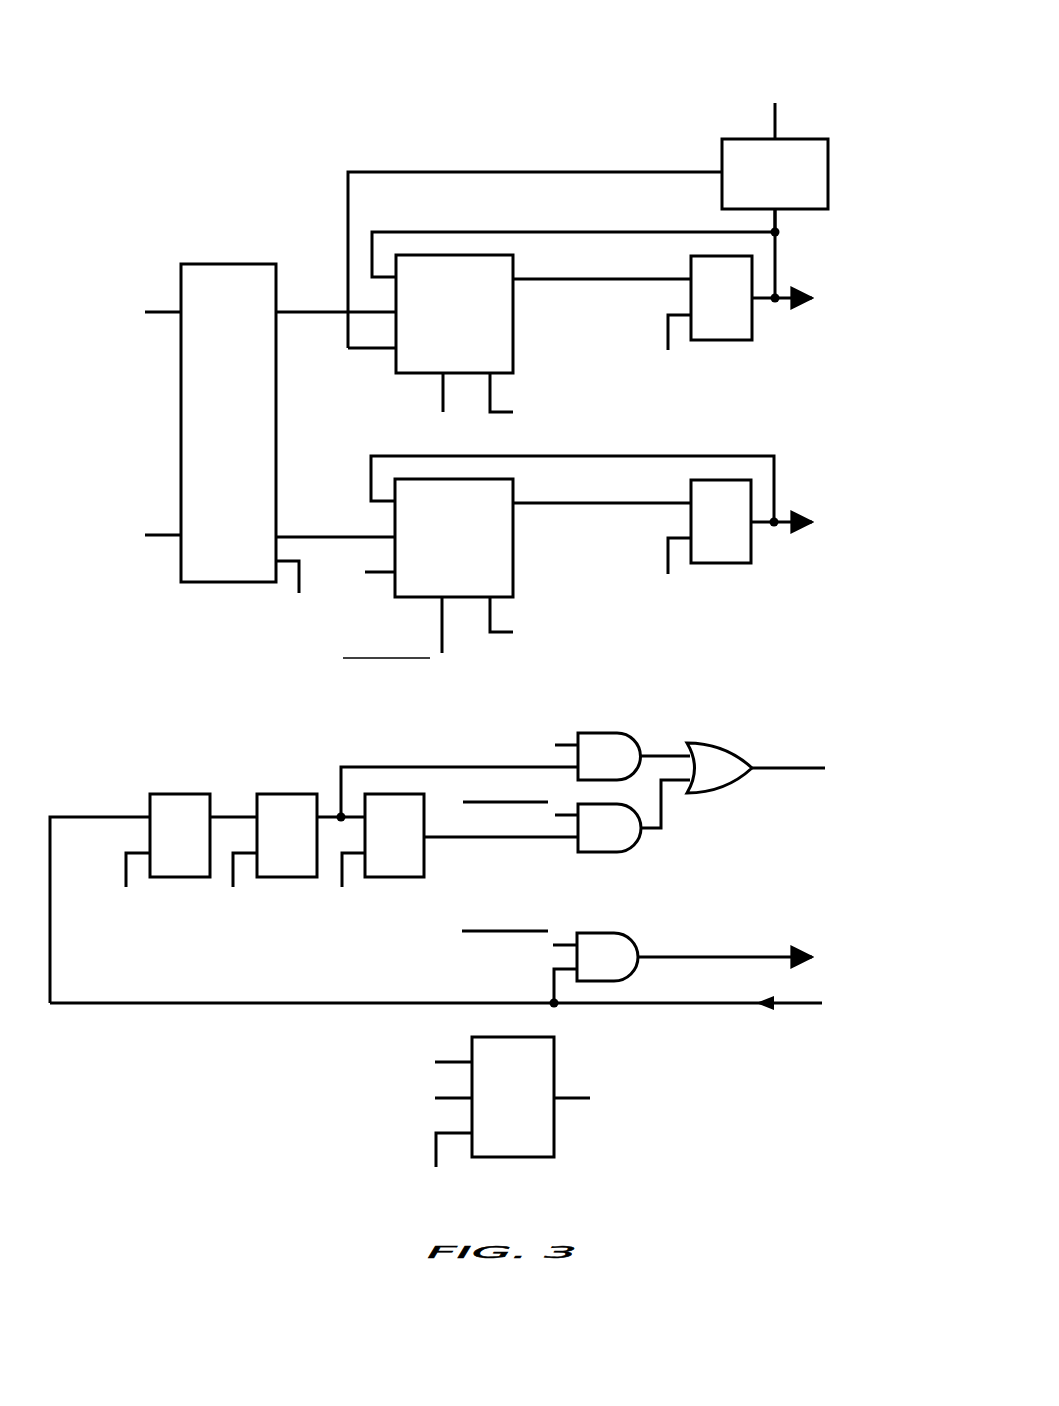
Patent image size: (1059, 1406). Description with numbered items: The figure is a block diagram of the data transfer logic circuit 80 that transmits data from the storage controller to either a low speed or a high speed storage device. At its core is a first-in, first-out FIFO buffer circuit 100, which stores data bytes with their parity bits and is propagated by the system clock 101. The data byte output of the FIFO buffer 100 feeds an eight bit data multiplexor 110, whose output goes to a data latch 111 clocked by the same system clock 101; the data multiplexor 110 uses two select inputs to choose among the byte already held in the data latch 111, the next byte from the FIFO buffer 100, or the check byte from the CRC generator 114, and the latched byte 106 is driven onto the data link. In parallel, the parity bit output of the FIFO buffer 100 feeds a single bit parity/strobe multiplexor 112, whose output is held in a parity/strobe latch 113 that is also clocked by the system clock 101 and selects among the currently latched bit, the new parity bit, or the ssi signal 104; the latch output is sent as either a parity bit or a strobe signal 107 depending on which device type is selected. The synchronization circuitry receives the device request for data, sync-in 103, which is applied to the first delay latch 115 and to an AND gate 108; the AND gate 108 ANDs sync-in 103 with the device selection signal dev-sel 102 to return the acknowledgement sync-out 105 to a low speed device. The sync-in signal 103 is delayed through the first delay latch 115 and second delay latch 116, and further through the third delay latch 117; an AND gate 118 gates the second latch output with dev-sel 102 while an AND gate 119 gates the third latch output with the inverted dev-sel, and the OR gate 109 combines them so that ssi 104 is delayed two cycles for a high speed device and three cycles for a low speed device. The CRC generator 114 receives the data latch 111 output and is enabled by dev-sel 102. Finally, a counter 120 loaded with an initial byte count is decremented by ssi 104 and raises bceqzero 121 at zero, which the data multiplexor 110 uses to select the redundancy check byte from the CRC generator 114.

The data transfer logic circuit 80 is at (266, 66).
The FIFO buffer circuit 100 is at (249, 454).
The system clock 101 is at (114, 558).
The device selection signal (dev-sel) 102 is at (782, 68).
The sync-in signal 103 is at (871, 1026).
The ssi synchronization signal 104 is at (416, 420).
The sync-out signal 105 is at (870, 937).
The 0:7 output 106 is at (852, 280).
The parity bit or strobe signal 107 is at (848, 503).
The AND gate 108 is at (590, 933).
The combinational logic (OR gate) 109 is at (722, 793).
The data multiplexor 110 is at (513, 318).
The data latch 111 is at (752, 318).
The parity/strobe multiplexor 112 is at (513, 545).
The parity/strobe latch 113 is at (751, 545).
The CRC generator 114 is at (828, 176).
The first delay latch 115 is at (181, 794).
The second delay latch 116 is at (287, 794).
The third delay latch 117 is at (424, 860).
The AND gate 118 is at (606, 733).
The AND gate 119 is at (612, 852).
The counter 120 is at (533, 1129).
The bceqzero signal 121 is at (650, 1120).